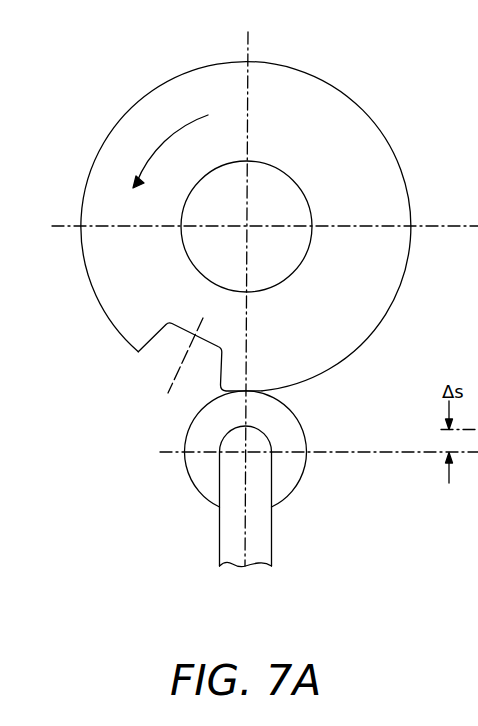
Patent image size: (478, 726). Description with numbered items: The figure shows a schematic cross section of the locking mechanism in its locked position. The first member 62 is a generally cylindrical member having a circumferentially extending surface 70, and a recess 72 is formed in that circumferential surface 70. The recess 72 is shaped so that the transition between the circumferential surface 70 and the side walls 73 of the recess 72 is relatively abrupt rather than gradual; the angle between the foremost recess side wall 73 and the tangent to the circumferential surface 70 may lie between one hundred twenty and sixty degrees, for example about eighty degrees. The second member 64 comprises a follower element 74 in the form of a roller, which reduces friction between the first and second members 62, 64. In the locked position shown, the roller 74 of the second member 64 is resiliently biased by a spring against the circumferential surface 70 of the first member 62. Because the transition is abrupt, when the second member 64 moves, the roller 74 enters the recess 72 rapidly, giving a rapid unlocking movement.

The circumferential surface 70 is at (133, 105).
The first member 62 is at (110, 265).
The recess side walls 73 is at (158, 330).
The recess 72 is at (167, 357).
The follower element 74 is at (187, 468).
The second member 64 is at (151, 527).